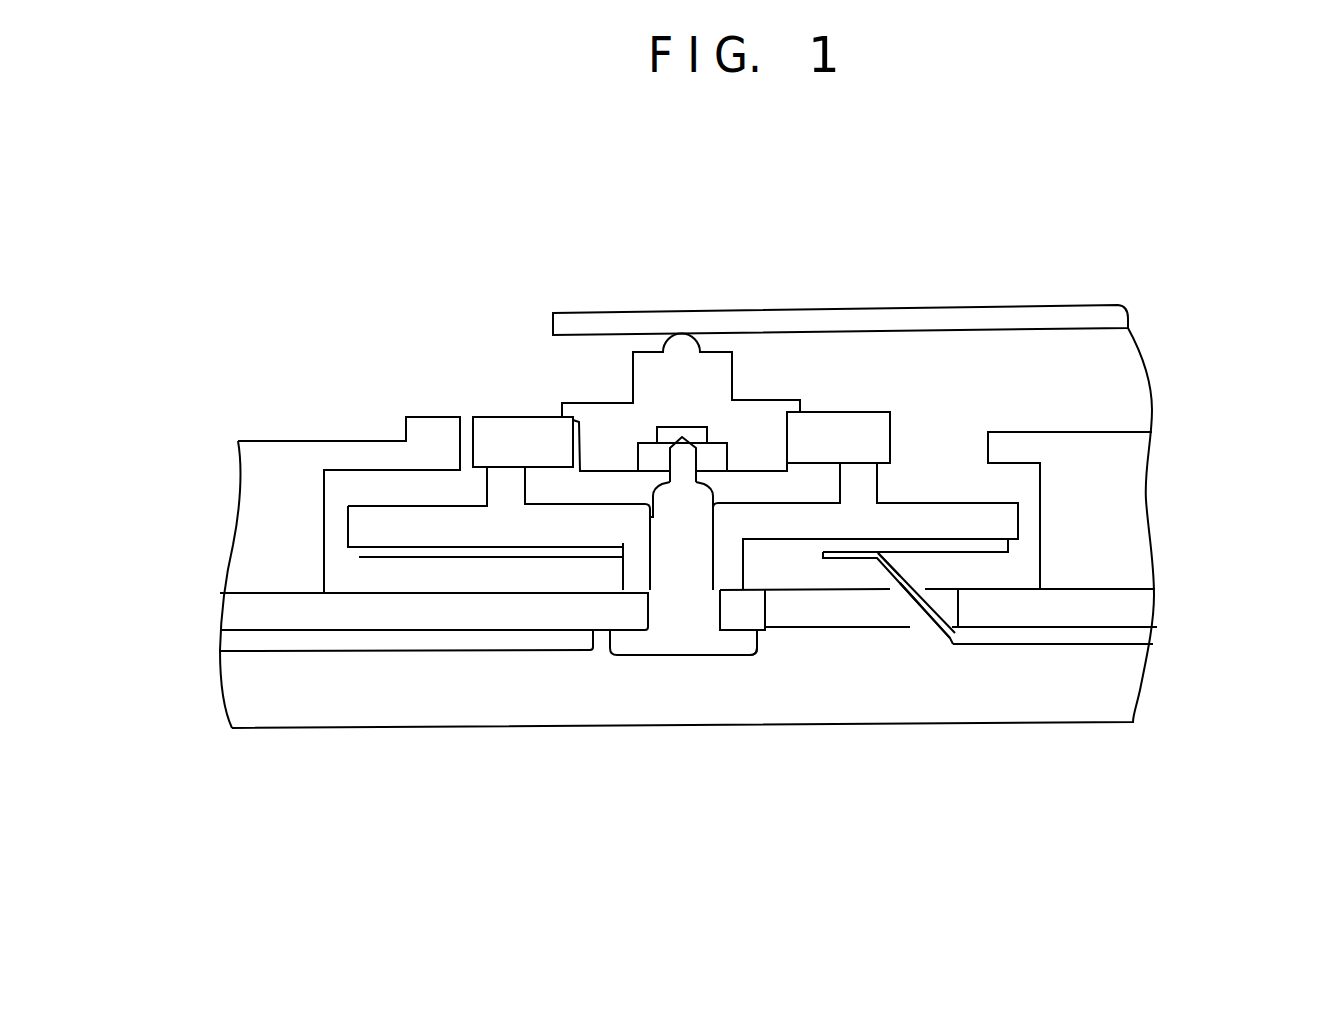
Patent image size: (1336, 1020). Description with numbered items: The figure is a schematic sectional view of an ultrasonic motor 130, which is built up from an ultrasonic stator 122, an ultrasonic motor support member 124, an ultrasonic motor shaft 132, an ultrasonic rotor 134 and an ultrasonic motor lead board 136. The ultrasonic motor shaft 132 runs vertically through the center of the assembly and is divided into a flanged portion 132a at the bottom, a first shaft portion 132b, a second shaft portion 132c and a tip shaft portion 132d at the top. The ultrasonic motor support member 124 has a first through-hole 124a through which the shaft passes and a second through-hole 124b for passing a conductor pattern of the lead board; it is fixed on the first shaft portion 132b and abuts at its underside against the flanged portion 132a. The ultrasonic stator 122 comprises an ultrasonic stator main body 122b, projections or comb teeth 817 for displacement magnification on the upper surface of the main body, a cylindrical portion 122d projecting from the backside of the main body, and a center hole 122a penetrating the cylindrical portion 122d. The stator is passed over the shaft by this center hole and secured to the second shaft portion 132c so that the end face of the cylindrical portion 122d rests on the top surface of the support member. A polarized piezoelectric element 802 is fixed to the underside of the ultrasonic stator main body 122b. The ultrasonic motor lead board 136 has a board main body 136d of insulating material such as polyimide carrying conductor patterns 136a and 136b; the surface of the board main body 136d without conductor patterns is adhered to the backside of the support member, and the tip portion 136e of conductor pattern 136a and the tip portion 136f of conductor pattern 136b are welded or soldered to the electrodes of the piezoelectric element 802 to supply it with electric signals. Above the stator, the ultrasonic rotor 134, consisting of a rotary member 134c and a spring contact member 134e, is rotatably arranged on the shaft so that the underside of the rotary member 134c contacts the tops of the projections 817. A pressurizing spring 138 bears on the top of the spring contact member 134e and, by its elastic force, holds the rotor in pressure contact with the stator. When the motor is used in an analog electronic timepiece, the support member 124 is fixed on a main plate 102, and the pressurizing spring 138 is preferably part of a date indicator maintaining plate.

The ultrasonic motor 130 is at (522, 226).
The pressurizing spring 138 is at (932, 318).
The main plate 102 is at (1122, 537).
The ultrasonic rotor 134 is at (697, 387).
The rotary member 134c is at (520, 435).
The spring contact member 134e is at (622, 421).
The polarized piezoelectric element 802 is at (953, 547).
The tip shaft portion 132d is at (683, 465).
The ultrasonic motor shaft 132 is at (685, 565).
The flanged portion 132a is at (745, 643).
The first shaft portion 132b is at (700, 613).
The second shaft portion 132c is at (689, 598).
The ultrasonic stator 122 is at (550, 527).
The center hole 122a is at (652, 545).
The ultrasonic stator main body 122b is at (383, 518).
The cylindrical portion 122d is at (633, 565).
The projections (comb teeth) 817 is at (503, 492).
The ultrasonic motor support member 124 is at (317, 623).
The first through-hole 124a is at (648, 609).
The second through-hole 124b is at (764, 609).
The ultrasonic motor lead board 136 is at (1023, 635).
The conductor pattern 136a is at (918, 613).
The conductor pattern 136b is at (1017, 732).
The tip portion 136e is at (889, 564).
The tip portion 136f is at (910, 594).
The board main body 136d is at (1128, 633).